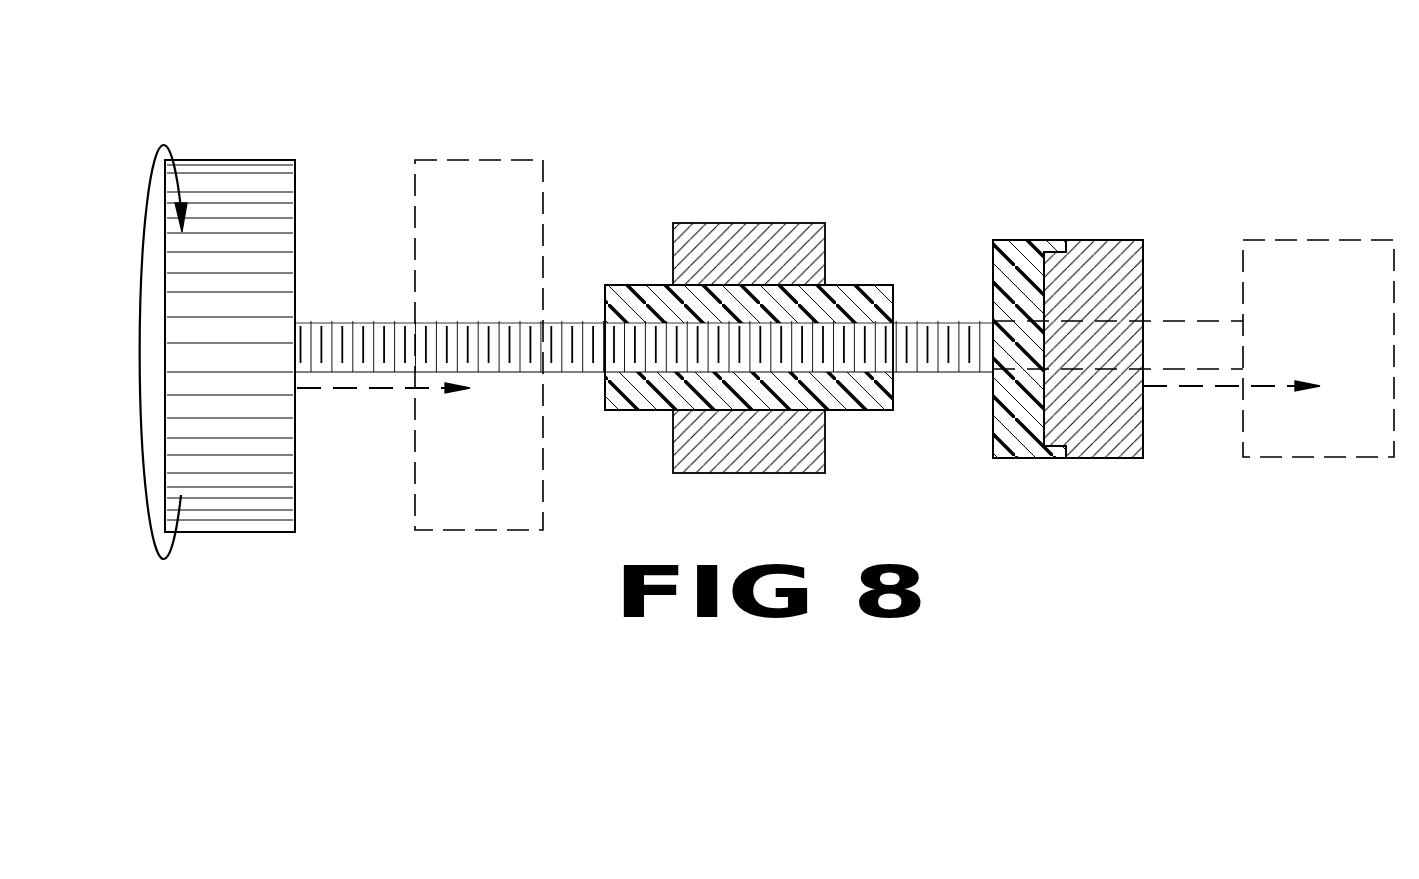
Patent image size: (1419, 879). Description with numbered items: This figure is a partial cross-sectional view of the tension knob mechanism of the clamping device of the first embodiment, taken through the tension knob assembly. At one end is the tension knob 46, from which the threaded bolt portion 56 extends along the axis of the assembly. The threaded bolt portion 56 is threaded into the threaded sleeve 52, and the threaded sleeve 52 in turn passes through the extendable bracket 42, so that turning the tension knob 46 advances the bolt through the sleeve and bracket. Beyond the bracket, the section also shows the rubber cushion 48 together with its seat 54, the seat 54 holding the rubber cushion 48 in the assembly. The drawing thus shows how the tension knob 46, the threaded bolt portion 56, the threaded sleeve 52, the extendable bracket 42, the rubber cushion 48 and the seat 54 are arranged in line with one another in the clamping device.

The tension knob 46 is at (248, 160).
The threaded bolt portion 56 is at (573, 323).
The threaded sleeve 52 is at (860, 284).
The extendable bracket 42 is at (755, 223).
The seat 54 is at (1012, 240).
The rubber cushion 48 is at (1098, 458).